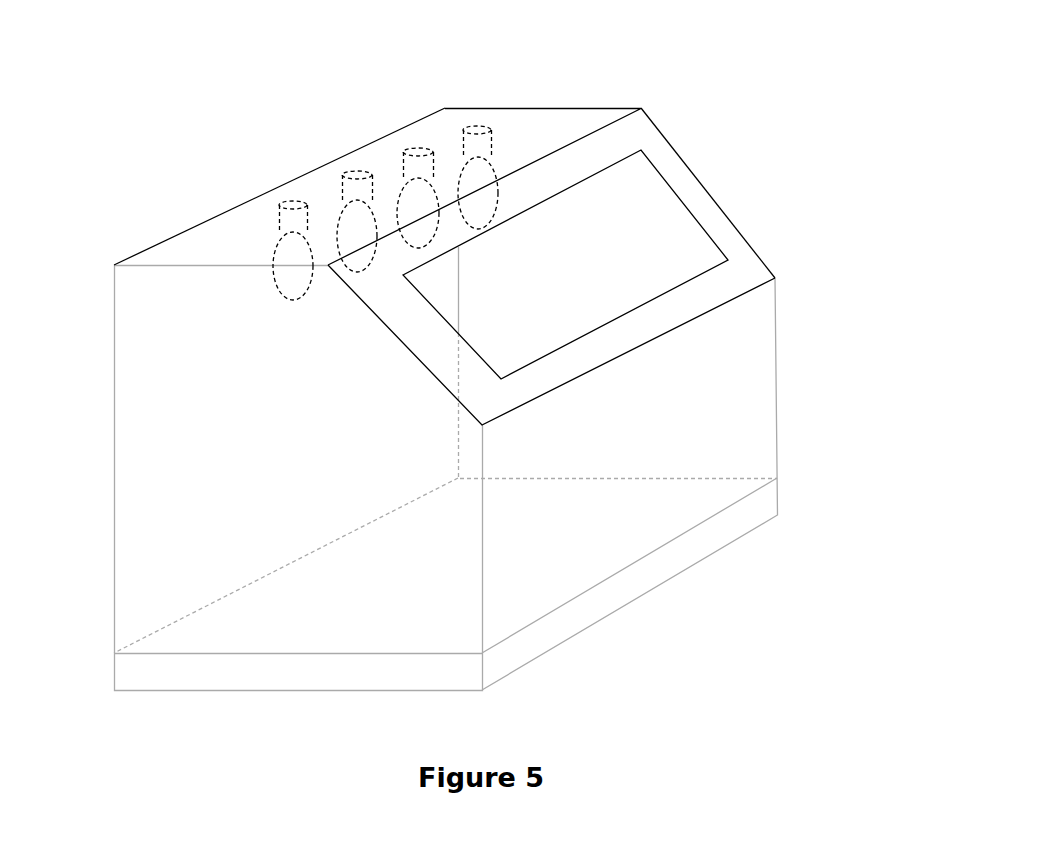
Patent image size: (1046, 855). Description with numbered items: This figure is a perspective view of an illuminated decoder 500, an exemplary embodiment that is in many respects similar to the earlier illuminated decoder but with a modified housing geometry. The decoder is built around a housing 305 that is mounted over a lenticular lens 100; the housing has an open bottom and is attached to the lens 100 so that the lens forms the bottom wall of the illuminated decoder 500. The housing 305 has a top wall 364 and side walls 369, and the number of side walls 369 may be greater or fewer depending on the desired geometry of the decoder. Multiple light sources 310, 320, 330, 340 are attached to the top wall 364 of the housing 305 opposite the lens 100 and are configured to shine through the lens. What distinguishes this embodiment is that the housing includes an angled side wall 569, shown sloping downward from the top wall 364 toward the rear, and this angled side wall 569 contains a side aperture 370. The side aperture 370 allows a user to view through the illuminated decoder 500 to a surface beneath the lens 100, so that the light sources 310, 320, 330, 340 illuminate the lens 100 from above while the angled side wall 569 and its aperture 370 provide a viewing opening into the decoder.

The lenticular lens 100 is at (667, 580).
The housing 305 is at (218, 213).
The light source 310 is at (292, 198).
The light source 320 is at (357, 169).
The light source 330 is at (417, 148).
The light source 340 is at (477, 123).
The top wall 364 is at (329, 184).
The side wall 369 is at (192, 438).
The side aperture 370 is at (712, 235).
The illuminated decoder 500 is at (543, 80).
The angled side wall 569 is at (697, 197).